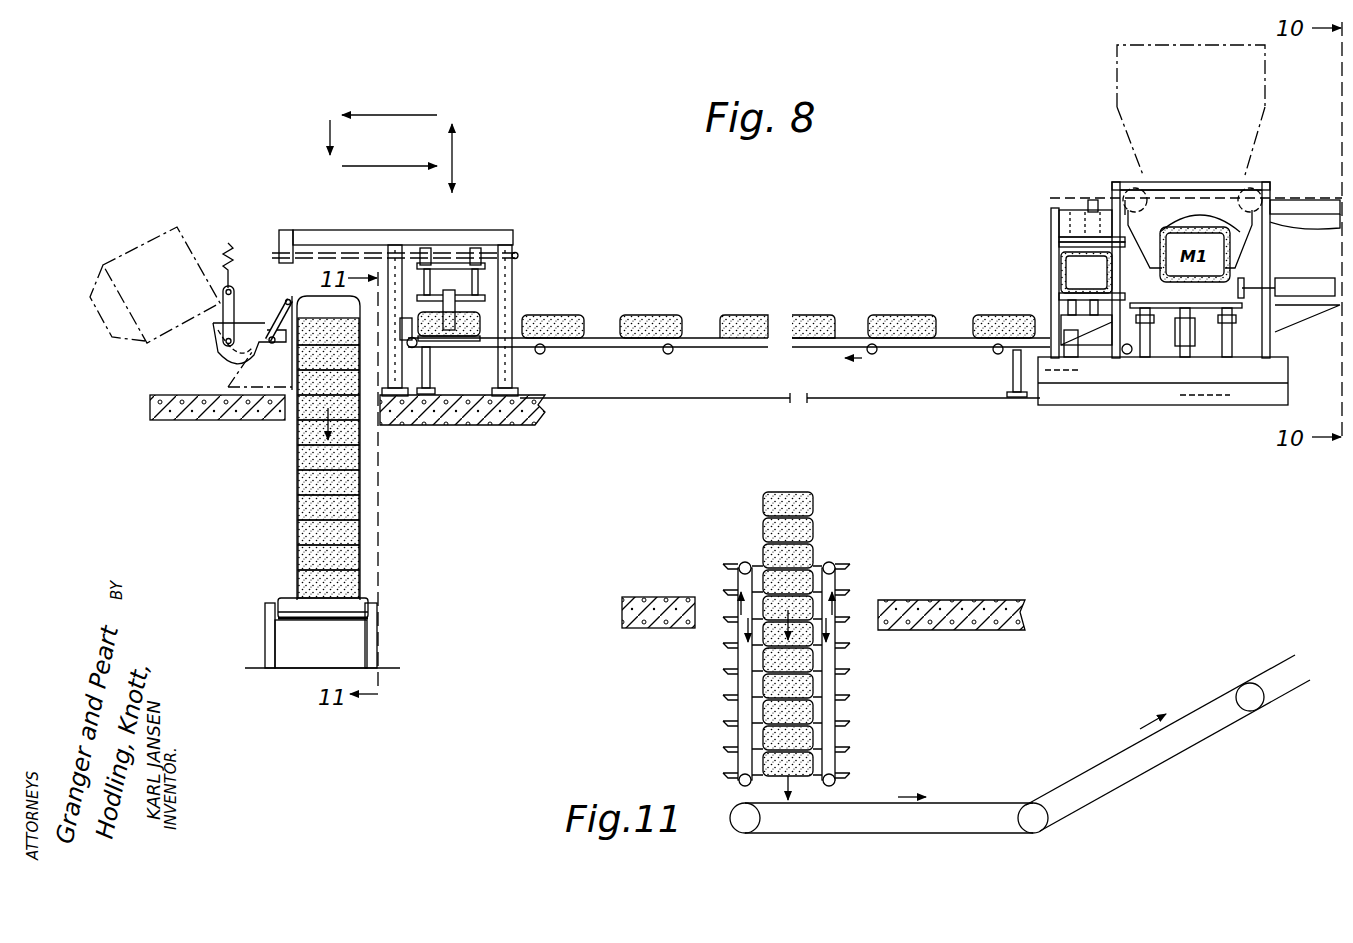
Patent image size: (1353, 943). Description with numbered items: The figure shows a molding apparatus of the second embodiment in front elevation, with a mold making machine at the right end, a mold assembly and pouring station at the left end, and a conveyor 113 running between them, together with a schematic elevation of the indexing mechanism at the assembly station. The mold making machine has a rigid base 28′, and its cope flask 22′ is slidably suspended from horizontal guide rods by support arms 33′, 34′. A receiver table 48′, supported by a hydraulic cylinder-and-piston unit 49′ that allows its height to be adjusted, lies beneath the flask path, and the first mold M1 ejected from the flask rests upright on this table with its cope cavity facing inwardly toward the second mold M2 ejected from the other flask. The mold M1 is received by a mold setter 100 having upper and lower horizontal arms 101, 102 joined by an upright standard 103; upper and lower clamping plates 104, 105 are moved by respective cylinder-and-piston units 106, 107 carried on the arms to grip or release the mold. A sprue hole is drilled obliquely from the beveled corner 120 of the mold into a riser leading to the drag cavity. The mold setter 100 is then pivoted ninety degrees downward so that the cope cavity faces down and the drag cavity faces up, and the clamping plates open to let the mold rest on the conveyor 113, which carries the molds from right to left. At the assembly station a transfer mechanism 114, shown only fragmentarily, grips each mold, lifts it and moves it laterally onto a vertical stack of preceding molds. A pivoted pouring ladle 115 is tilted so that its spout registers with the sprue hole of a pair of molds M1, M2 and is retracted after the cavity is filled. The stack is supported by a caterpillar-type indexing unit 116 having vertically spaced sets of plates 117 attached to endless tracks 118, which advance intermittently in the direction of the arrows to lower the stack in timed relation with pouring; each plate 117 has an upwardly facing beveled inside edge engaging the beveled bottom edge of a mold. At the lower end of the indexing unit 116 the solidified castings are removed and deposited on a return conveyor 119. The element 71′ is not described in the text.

In FIG. 8, the cope flask 22′ is at (1222, 198).
In FIG. 8, the base 28′ is at (1280, 368).
In FIG. 8, the support arm 33′ is at (1255, 243).
In FIG. 8, the support arm 34′ is at (1148, 215).
In FIG. 8, the receiver table 48′ is at (1178, 312).
In FIG. 8, the hydraulic cylinder-and-piston unit 49′ is at (1188, 340).
In FIG. 8, the actuator 71′ is at (1300, 292).
In FIG. 8, the mold setter 100 is at (1053, 276).
In FIG. 8, the upper horizontal arm 101 is at (1075, 210).
In FIG. 8, the lower horizontal arm 102 is at (1070, 322).
In FIG. 8, the upright standard 103 is at (1055, 222).
In FIG. 8, the upper clamping plate 104 is at (1060, 240).
In FIG. 8, the lower clamping plate 105 is at (1062, 297).
In FIG. 8, the cylinder-and-piston unit 106 is at (1093, 200).
In FIG. 8, the cylinder-and-piston unit 107 is at (1100, 350).
In FIG. 8, the conveyor 113 is at (905, 349).
In FIG. 8, the transfer mechanism 114 is at (484, 296).
In FIG. 8, the pouring ladle 115 is at (222, 357).
In FIG. 11, the indexing unit 116 is at (775, 646).
In FIG. 11, the plates 117 is at (725, 669).
In FIG. 11, the endless belts or tracks 118 is at (725, 650).
In FIG. 8, the return conveyor 119 is at (290, 603).
In FIG. 11, the return conveyor 119 is at (975, 802).
In FIG. 8, the beveled corner 120 is at (296, 293).
In FIG. 8, the first mold M1 is at (912, 300).
In FIG. 8, the second mold M2 is at (992, 318).